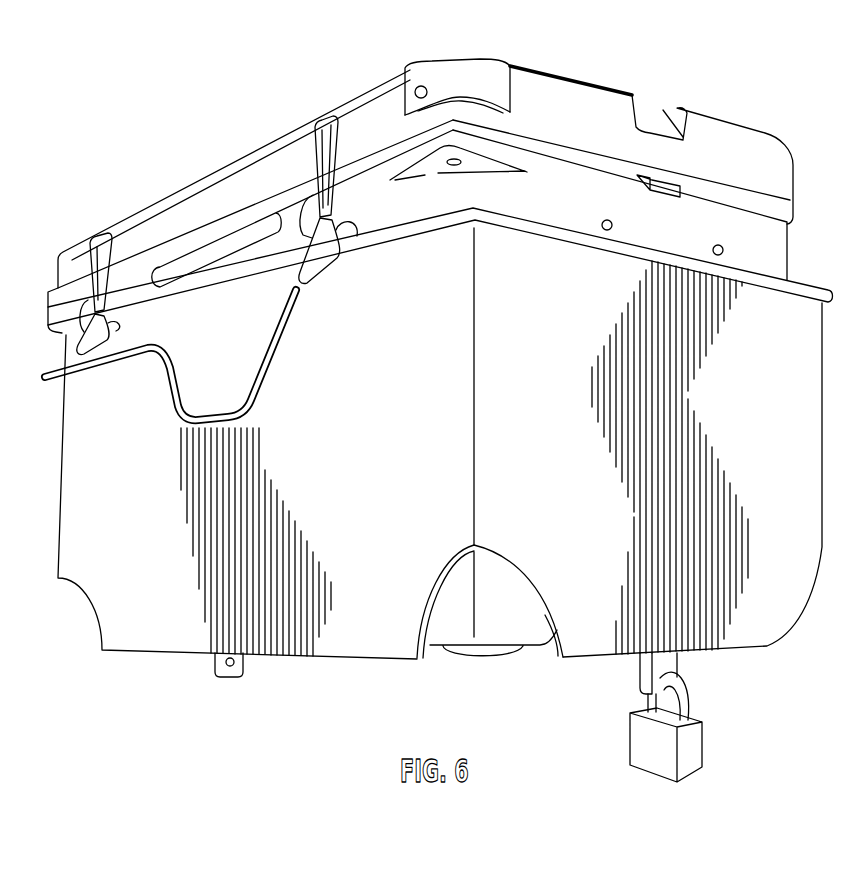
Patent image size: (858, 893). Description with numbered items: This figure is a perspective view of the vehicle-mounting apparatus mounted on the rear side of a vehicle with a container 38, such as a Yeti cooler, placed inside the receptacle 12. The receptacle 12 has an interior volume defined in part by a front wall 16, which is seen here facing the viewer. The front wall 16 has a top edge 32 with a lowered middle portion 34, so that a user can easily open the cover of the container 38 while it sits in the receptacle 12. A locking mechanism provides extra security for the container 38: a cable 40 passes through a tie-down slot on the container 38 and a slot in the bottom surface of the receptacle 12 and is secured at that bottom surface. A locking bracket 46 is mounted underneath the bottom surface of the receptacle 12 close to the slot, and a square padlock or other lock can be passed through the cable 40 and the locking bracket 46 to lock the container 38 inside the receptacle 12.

The container 38 is at (530, 64).
The cable 40 is at (668, 180).
The top edge 32 is at (363, 256).
The lowered middle portion 34 is at (213, 403).
The front wall 16 is at (245, 565).
The receptacle 12 is at (685, 563).
The locking bracket 46 is at (680, 677).